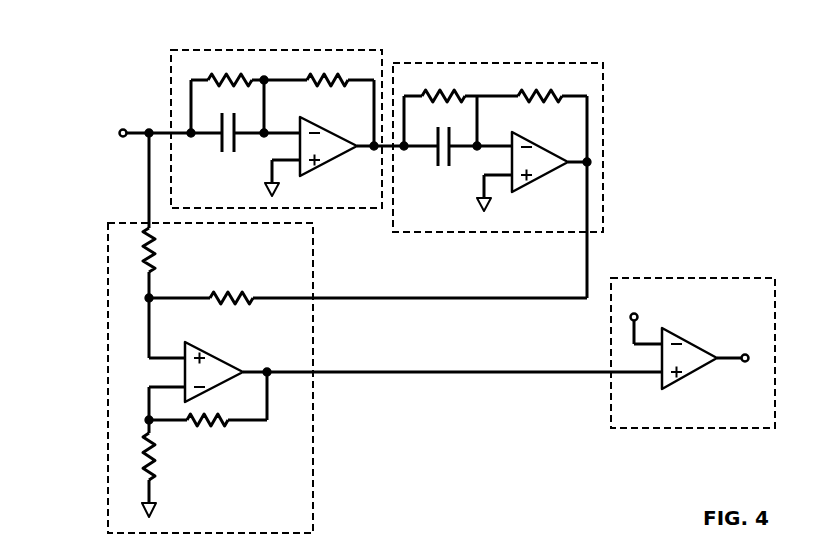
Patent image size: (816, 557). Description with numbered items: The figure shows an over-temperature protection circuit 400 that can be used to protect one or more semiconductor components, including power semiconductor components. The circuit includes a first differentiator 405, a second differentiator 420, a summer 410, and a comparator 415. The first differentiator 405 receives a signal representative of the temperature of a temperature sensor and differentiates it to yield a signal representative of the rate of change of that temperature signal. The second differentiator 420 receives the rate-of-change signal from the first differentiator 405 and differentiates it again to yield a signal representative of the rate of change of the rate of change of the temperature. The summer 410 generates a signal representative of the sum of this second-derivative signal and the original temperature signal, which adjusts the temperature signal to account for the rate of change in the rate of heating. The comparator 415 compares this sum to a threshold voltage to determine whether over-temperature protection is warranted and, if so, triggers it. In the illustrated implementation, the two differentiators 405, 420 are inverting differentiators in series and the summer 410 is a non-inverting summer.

The over-temperature protection circuit 400 is at (72, 63).
The first differentiator 405 is at (300, 49).
The second differentiator 420 is at (488, 63).
The summer 410 is at (108, 270).
The comparator 415 is at (767, 275).